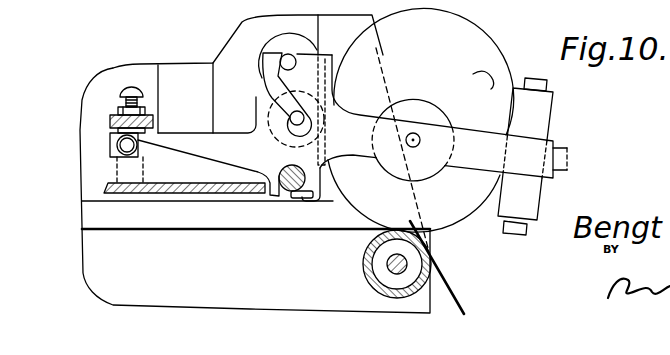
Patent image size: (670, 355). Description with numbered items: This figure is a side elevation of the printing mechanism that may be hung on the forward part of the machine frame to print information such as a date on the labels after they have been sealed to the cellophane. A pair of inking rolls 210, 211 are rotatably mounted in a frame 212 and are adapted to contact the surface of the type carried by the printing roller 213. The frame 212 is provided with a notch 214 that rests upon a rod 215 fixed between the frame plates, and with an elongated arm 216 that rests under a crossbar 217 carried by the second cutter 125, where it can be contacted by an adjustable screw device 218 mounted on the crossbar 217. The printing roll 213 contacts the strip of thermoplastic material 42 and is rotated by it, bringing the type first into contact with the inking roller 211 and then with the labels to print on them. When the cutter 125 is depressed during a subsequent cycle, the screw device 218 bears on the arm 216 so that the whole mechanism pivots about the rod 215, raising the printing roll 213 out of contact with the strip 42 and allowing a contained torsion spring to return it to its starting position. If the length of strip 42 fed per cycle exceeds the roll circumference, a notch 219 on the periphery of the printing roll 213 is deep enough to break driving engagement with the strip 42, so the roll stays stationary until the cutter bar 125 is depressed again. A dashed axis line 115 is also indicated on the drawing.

The inking roll 210 is at (288, 41).
The inking roller 211 is at (283, 102).
The frame 212 is at (270, 164).
The printing roller 213 is at (438, 66).
The notch 214 is at (308, 200).
The rod 215 is at (279, 209).
The elongated arm 216 is at (198, 146).
The crossbar 217 is at (153, 123).
The adjustable screw device 218 is at (133, 87).
The notch 219 is at (492, 84).
The second cutter 125 is at (151, 189).
The strip of thermoplastic material 42 is at (487, 272).
The axis 115 is at (394, 42).